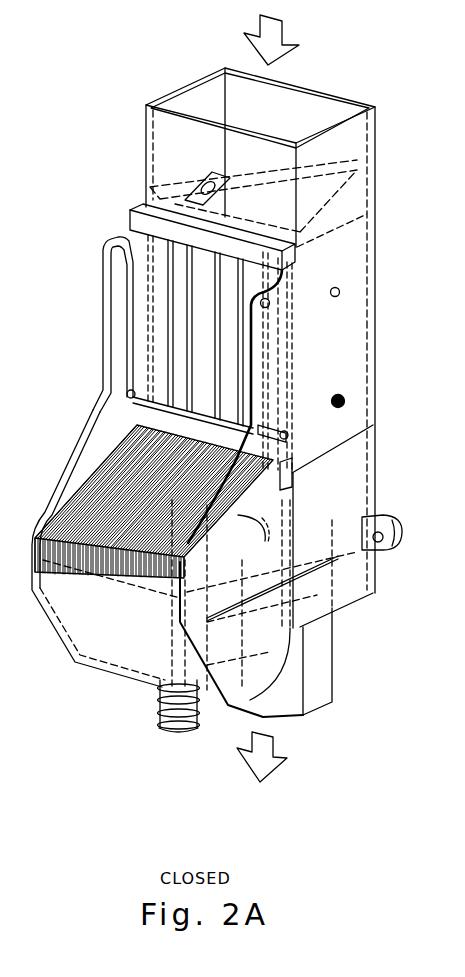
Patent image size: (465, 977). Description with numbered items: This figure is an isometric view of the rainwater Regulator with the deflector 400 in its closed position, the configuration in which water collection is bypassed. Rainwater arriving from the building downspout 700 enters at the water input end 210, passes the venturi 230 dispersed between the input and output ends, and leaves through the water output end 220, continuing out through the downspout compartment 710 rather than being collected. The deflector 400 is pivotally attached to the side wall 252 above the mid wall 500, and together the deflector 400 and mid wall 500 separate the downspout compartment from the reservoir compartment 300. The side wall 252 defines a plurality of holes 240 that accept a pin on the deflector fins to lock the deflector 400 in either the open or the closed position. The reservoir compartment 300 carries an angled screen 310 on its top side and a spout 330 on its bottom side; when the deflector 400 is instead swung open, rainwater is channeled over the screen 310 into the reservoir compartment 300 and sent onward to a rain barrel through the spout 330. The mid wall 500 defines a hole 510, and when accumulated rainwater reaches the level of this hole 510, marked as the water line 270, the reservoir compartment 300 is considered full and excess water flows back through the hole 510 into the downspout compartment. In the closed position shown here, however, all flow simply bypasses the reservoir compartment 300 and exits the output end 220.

The downspout 700 is at (287, 17).
The water input end 210 is at (380, 133).
The venturi 230 is at (327, 197).
The deflector 400 is at (125, 263).
The plurality of holes 240 is at (282, 304).
The side wall 252 is at (350, 395).
The mid wall 500 is at (292, 477).
The hole 510 is at (265, 523).
The screen 310 is at (60, 427).
The water line 270 is at (338, 565).
The reservoir compartment 300 is at (105, 628).
The spout 330 is at (157, 733).
The water output end 220 is at (333, 700).
The downspout compartment flow 710 is at (285, 773).